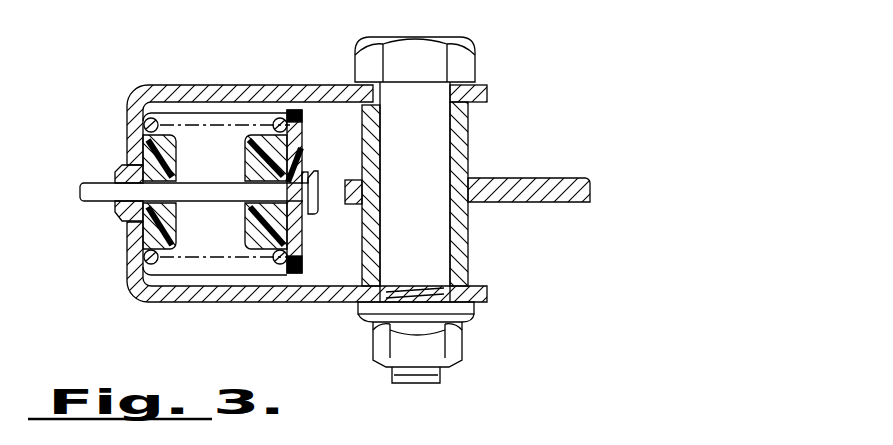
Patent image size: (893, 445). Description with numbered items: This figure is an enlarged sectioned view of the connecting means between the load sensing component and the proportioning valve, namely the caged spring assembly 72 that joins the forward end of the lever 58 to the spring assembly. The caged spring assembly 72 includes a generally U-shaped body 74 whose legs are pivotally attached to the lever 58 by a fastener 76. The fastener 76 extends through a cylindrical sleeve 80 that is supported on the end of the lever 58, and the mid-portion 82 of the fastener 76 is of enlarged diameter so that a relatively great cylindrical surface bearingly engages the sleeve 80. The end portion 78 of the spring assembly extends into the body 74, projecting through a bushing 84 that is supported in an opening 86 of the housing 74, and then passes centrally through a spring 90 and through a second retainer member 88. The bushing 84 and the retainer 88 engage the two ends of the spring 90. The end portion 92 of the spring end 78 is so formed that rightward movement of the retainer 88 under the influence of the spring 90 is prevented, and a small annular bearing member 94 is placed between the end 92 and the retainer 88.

The lever 58 is at (585, 190).
The caged spring assembly 72 is at (307, 222).
The U-shaped body 74 is at (293, 297).
The fastener 76 is at (467, 47).
The end portion of spring 78 is at (88, 194).
The cylindrical sleeve 80 is at (467, 123).
The mid-portion of fastener 82 is at (440, 238).
The bushing 84 is at (117, 220).
The opening 86 is at (118, 167).
The second retainer member 88 is at (297, 143).
The spring 90 is at (145, 259).
The end portion of spring end 92 is at (313, 214).
The annular bearing member 94 is at (305, 172).